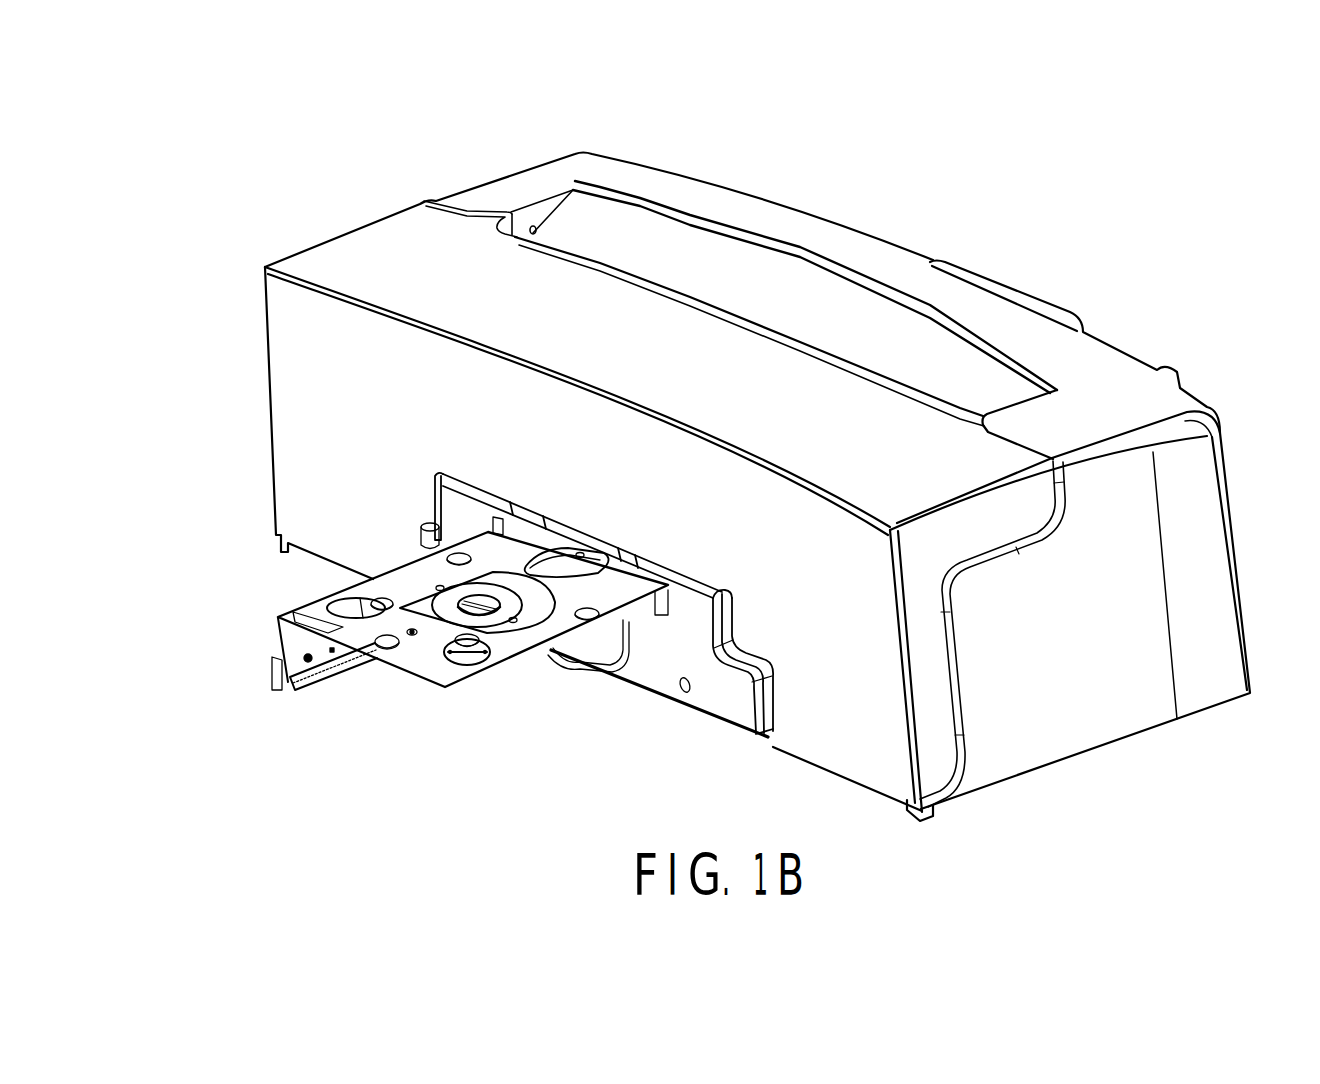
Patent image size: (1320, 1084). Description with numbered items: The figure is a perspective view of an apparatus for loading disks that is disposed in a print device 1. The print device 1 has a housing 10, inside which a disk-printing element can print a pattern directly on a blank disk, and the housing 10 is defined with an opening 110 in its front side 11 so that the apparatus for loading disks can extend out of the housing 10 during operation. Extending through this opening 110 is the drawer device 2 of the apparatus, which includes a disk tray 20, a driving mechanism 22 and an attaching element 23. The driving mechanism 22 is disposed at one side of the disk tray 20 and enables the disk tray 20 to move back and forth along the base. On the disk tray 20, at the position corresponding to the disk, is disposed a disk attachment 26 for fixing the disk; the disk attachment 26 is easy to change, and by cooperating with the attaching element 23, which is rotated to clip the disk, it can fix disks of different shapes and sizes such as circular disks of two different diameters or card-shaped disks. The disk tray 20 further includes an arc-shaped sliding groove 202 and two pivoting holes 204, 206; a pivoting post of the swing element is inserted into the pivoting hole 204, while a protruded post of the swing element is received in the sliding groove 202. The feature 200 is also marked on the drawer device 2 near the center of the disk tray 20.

The print device 1 is at (1038, 192).
The housing 10 is at (807, 211).
The front side 11 is at (288, 432).
The opening 110 is at (498, 517).
The drawer device 2 is at (513, 690).
The disk tray 20 is at (402, 575).
The pivot hub 200 is at (470, 597).
The arc-shaped sliding groove 202 is at (638, 585).
The pivoting hole 204 is at (527, 523).
The pivoting hole 206 is at (412, 635).
The driving mechanism 22 is at (268, 678).
The attaching element 23 is at (563, 563).
The disk attachment 26 is at (350, 603).